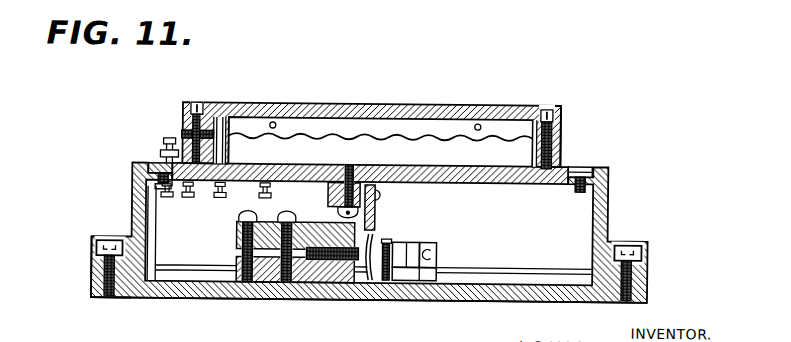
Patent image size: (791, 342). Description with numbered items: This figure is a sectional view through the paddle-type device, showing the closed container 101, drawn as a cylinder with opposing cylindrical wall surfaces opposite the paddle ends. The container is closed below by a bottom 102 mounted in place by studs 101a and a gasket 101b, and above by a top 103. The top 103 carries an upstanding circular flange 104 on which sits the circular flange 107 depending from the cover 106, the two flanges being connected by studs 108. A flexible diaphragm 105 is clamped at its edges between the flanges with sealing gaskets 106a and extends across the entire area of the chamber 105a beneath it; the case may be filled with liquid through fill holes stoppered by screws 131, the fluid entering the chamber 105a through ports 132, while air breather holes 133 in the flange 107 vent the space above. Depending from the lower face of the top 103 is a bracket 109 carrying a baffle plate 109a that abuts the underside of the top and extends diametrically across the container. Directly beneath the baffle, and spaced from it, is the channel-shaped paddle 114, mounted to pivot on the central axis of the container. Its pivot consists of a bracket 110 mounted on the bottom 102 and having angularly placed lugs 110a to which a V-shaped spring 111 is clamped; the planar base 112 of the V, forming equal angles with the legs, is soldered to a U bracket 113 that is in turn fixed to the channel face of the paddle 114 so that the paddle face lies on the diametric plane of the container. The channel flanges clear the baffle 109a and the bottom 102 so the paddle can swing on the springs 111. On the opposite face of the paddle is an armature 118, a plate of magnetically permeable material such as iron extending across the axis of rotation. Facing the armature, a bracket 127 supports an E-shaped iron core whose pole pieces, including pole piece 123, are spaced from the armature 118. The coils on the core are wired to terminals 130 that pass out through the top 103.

The container 101 is at (609, 188).
The studs 101a is at (96, 263).
The gasket 101b is at (92, 281).
The bottom 102 is at (185, 289).
The top 103 is at (443, 167).
The upstanding circular flange 104 is at (553, 148).
The flexible diaphragm 105 is at (355, 135).
The chamber 105a is at (380, 142).
The cover 106 is at (423, 88).
The sealing gaskets 106a is at (181, 130).
The circular flange 107 is at (560, 128).
The studs 108 is at (183, 121).
The bracket 109 is at (328, 194).
The baffle plate 109a is at (376, 208).
The bracket 110 is at (436, 277).
The angularly placed lugs 110a is at (437, 249).
The V-shaped spring 111 is at (407, 252).
The planar base 112 is at (404, 280).
The U bracket 113 is at (385, 281).
The paddle 114 is at (386, 246).
The armature 118 is at (365, 282).
The pole piece 123 is at (320, 262).
The bracket 127 is at (237, 233).
The terminals 130 is at (162, 147).
The screws 131 is at (147, 175).
The ports 132 is at (493, 183).
The air breather holes 133 is at (273, 122).